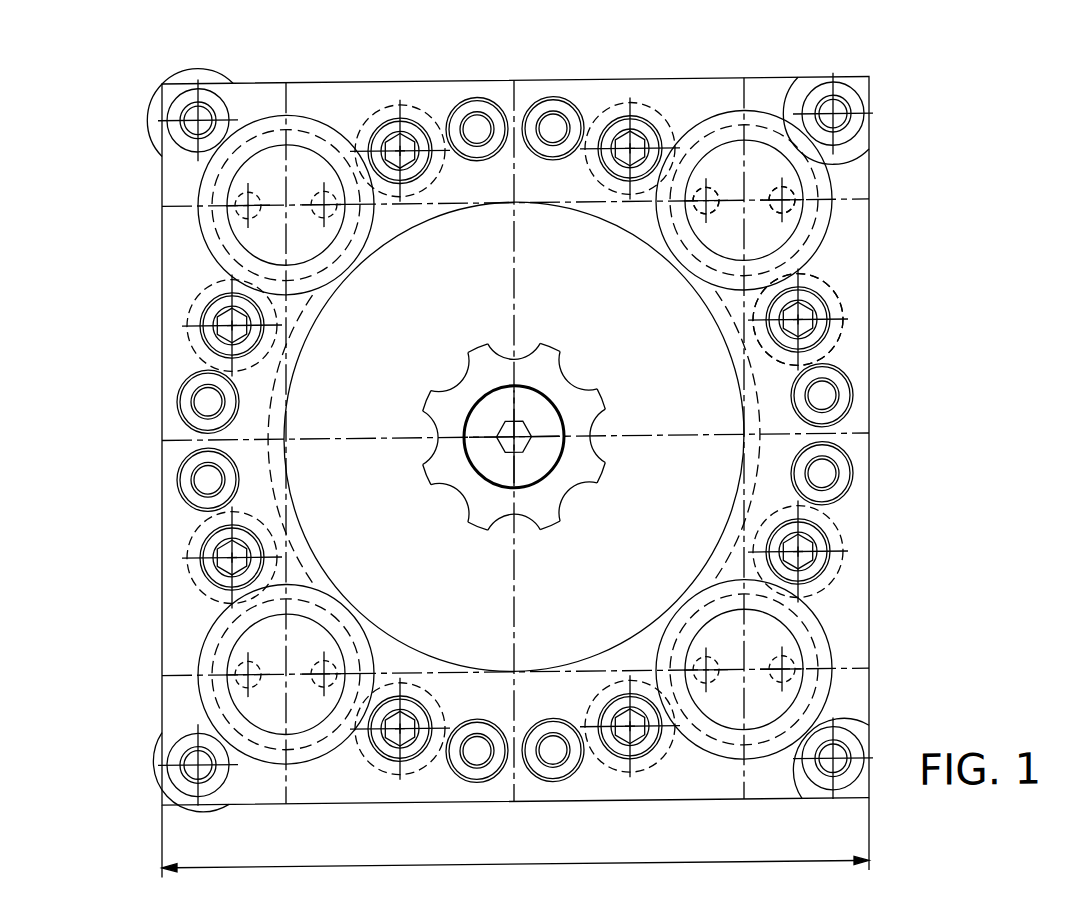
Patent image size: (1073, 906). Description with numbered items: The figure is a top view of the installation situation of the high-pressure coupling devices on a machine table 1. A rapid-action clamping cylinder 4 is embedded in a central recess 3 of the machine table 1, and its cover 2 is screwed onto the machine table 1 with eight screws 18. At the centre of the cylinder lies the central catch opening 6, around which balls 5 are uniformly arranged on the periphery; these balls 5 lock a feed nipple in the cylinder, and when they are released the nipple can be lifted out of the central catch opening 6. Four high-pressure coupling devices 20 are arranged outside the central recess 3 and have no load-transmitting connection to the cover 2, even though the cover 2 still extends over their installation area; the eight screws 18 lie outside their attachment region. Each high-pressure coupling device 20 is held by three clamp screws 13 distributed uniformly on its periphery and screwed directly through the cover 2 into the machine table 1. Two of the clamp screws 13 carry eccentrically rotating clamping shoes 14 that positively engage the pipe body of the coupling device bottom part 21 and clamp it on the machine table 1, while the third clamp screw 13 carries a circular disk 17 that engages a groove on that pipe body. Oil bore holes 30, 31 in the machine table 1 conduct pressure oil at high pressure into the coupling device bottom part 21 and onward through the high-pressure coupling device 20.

The machine table 1 is at (546, 440).
The cover 2 is at (847, 351).
The recess 3 is at (708, 488).
The rapid-action clamping cylinder 4 is at (700, 539).
The balls 5 is at (578, 375).
The central catch opening 6 is at (540, 493).
The clamp screws 13 is at (634, 137).
The clamping shoe 14 is at (808, 279).
The circular disk 17 is at (792, 103).
The screws 18 is at (478, 118).
The high-pressure coupling device 20 is at (212, 197).
The coupling device bottom part 21 is at (515, 437).
The oil bore hole 30 is at (707, 192).
The oil bore hole 31 is at (803, 207).